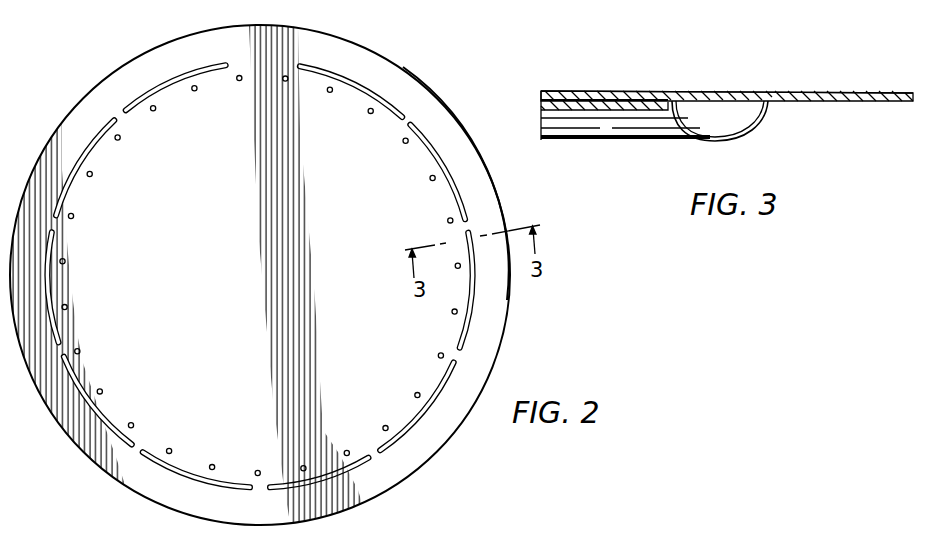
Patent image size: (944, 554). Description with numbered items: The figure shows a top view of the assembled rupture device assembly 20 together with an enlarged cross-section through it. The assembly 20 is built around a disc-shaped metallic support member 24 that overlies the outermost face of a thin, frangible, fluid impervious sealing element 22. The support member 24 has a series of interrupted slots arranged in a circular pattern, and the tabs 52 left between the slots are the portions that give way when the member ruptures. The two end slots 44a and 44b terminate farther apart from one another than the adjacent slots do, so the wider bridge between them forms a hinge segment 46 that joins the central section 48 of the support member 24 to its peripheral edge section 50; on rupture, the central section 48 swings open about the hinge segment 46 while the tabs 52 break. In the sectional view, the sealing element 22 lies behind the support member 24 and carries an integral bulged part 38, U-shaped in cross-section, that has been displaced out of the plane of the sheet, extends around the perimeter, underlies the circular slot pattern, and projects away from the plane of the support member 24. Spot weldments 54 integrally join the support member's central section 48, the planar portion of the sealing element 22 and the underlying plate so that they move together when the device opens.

In FIG. 2, the rupture device assembly 20 is at (402, 68).
In FIG. 3, the sealing element 22 is at (825, 103).
In FIG. 3, the support member 24 is at (770, 93).
In FIG. 3, the bulged part 38 is at (713, 141).
In FIG. 2, the end slot 44a is at (167, 87).
In FIG. 2, the end slot 44b is at (363, 97).
In FIG. 2, the hinge segment 46 is at (282, 62).
In FIG. 2, the central section 48 is at (236, 282).
In FIG. 2, the peripheral edge section 50 is at (443, 128).
In FIG. 2, the tabs 52 is at (117, 115).
In FIG. 2, the spot weldments 54 is at (132, 420).
In FIG. 3, the spot weldments 54 is at (570, 92).